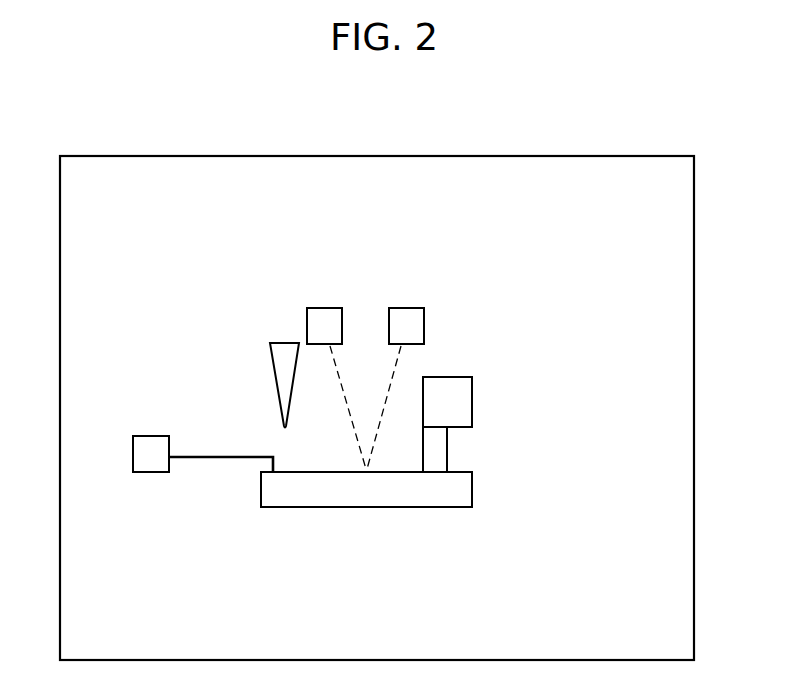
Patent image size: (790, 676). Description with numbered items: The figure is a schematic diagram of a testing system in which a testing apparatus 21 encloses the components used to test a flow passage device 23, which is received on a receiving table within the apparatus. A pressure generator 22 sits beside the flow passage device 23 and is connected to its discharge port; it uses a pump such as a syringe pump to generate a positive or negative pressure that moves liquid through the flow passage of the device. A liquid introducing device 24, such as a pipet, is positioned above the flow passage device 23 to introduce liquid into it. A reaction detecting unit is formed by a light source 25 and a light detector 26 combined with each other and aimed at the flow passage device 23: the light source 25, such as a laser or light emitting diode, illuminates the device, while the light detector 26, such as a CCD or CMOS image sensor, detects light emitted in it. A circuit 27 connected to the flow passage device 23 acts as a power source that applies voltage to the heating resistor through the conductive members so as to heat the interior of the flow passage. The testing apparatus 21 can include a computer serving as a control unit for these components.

The testing apparatus 21 is at (583, 156).
The pressure generator 22 is at (448, 385).
The flow passage device 23 is at (465, 490).
The liquid introducing device 24 is at (283, 375).
The light source 25 is at (323, 316).
The light detector 26 is at (405, 316).
The circuit 27 is at (153, 462).